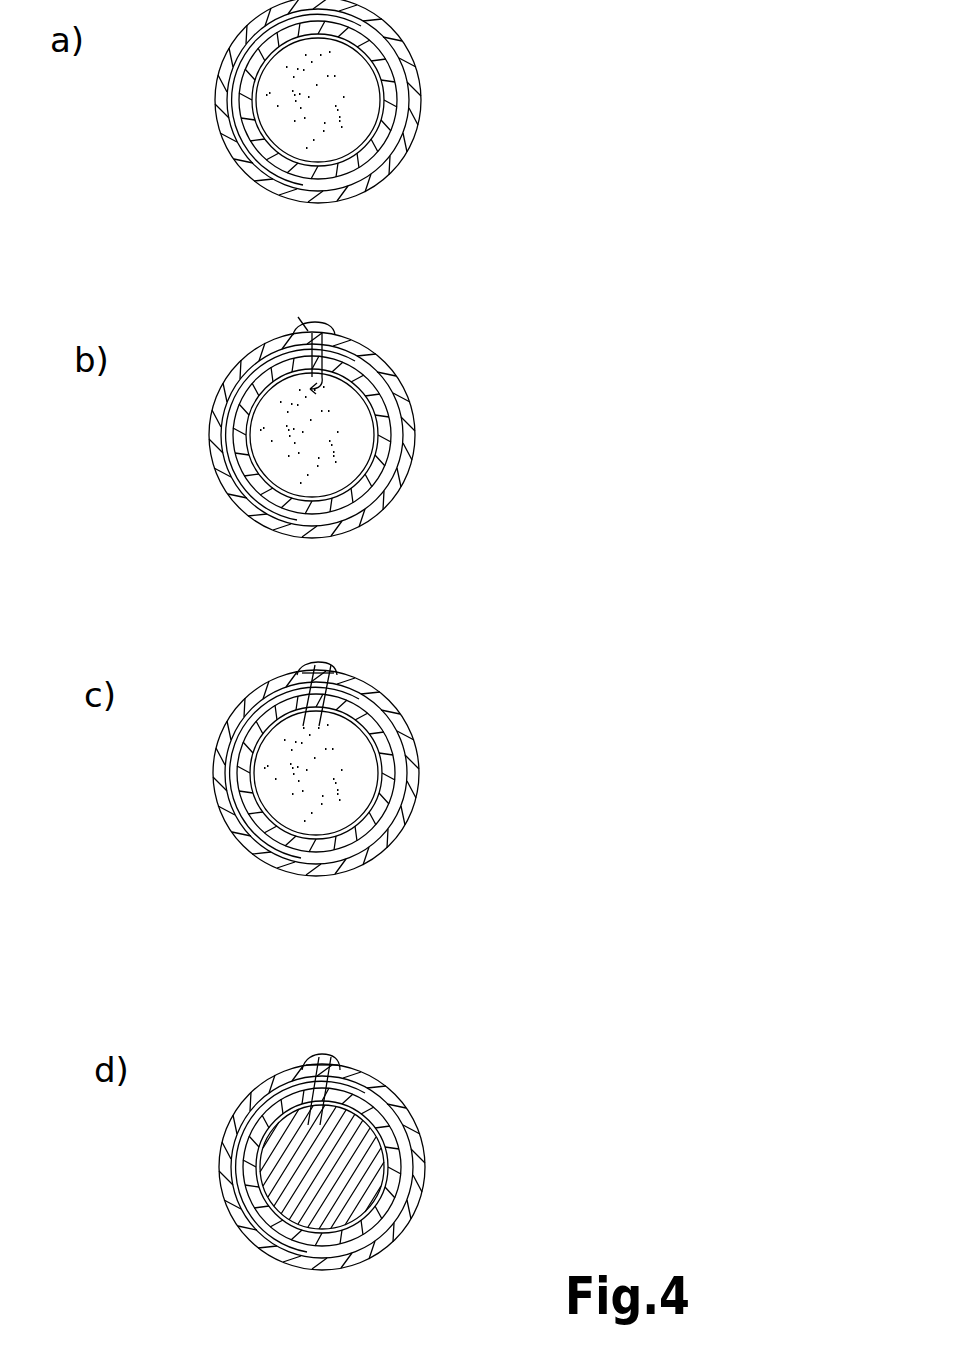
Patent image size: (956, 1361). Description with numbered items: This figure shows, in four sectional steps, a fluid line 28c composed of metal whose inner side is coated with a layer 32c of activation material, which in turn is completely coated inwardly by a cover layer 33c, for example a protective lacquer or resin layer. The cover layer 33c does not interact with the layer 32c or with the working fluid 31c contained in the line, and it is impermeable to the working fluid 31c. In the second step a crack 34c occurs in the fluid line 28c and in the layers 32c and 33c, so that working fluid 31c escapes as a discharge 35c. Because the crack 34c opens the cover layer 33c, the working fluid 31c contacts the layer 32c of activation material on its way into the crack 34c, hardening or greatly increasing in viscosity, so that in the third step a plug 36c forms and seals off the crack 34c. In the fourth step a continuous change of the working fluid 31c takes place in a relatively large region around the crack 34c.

The fluid line 28c is at (412, 65).
The layer of activation material 32c is at (413, 128).
The cover layer 33c is at (385, 160).
The working fluid 31c is at (343, 128).
The crack 34c is at (330, 360).
The discharge 35c is at (352, 311).
The plug 36c is at (323, 662).